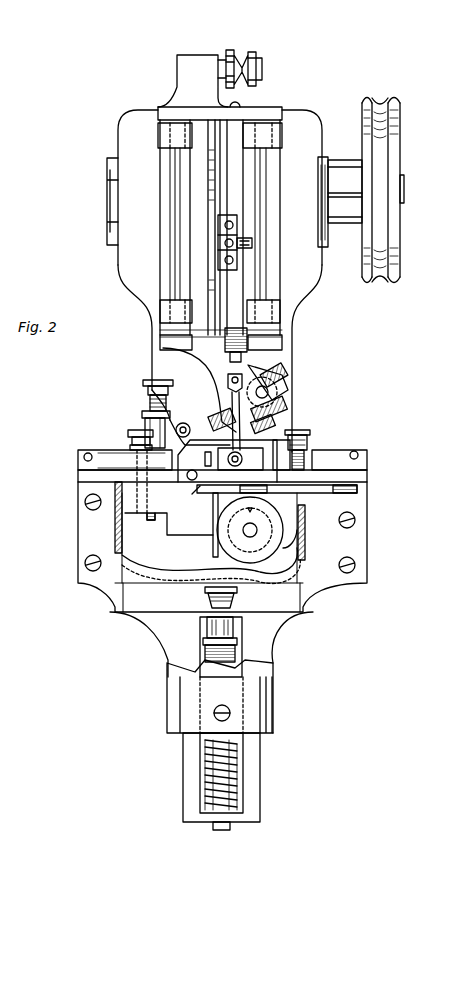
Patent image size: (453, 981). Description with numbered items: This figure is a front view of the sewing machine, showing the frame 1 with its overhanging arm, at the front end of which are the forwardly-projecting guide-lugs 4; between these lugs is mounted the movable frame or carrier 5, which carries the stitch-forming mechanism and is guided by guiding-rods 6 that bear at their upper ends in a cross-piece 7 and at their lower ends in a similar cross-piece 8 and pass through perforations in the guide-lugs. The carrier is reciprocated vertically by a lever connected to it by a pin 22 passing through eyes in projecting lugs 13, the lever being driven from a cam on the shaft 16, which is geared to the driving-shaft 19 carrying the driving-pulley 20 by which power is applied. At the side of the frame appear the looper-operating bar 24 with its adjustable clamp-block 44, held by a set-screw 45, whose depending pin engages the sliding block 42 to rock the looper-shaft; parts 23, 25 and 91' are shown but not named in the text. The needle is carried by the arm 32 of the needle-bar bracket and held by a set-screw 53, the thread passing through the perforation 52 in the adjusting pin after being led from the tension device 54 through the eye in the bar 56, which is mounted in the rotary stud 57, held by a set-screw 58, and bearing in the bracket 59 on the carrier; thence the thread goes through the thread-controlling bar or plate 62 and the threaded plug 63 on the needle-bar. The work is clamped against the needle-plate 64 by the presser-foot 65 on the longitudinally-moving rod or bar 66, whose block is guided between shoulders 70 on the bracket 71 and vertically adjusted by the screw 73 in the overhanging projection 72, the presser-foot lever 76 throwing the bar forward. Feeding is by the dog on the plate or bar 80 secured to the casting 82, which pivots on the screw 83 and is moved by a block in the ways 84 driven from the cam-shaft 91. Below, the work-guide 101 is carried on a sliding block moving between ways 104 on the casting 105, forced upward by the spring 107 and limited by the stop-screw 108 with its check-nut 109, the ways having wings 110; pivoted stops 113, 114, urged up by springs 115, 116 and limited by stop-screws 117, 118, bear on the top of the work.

The frame 1 is at (273, 107).
The guide-lugs 4 is at (159, 140).
The movable frame or carrier 5 is at (210, 227).
The guiding-rods 6 is at (172, 240).
The cross-piece 7 is at (276, 112).
The cross-piece 8 is at (286, 343).
The projecting lugs 13 is at (154, 719).
The shaft 16 is at (328, 228).
The driving-shaft 19 is at (405, 191).
The driving-pulley 20 is at (401, 130).
The pin 22 is at (218, 363).
The block 23 is at (192, 342).
The looper-operating bar 24 is at (262, 385).
The cam block 25 is at (275, 428).
The arm 32 is at (232, 398).
The sliding block 42 is at (284, 413).
The clamp-block 44 is at (284, 392).
The set-screw 45 is at (280, 373).
The perforation 52 is at (243, 460).
The set-screw 53 is at (227, 461).
The tension device 54 is at (238, 54).
The bar 56 is at (218, 252).
The rotary stud 57 is at (218, 238).
The set-screw 58 is at (252, 246).
The bracket 59 is at (218, 222).
The bar or plate 62 is at (237, 340).
The threaded plug 63 is at (228, 378).
The needle-plate 64 is at (216, 425).
The presser-foot 65 is at (205, 494).
The rod or bar 66 is at (185, 422).
The shoulders 70 is at (250, 530).
The bracket 71 is at (150, 405).
The overhanging projection 72 is at (155, 412).
The screw 73 is at (152, 380).
The presser-foot lever 76 is at (200, 418).
The plate or bar 80 is at (215, 496).
The casting 82 is at (172, 536).
The screw 83 is at (128, 520).
The ways 84 is at (242, 355).
The cam-shaft 91 is at (211, 560).
The guide end 91' is at (313, 538).
The work-guide 101 is at (220, 696).
The ways 104 is at (261, 787).
The casting 105 is at (222, 547).
The spring 107 is at (207, 765).
The stop-screw 108 is at (205, 655).
The check-nut 109 is at (237, 596).
The wings 110 is at (170, 662).
The pivoted guide or stop 113 is at (333, 450).
The pivoted guide or stop 114 is at (125, 451).
The spring 115 is at (300, 470).
The spring 116 is at (140, 470).
The stop-screw 117 is at (310, 440).
The stop-screw 118 is at (133, 464).